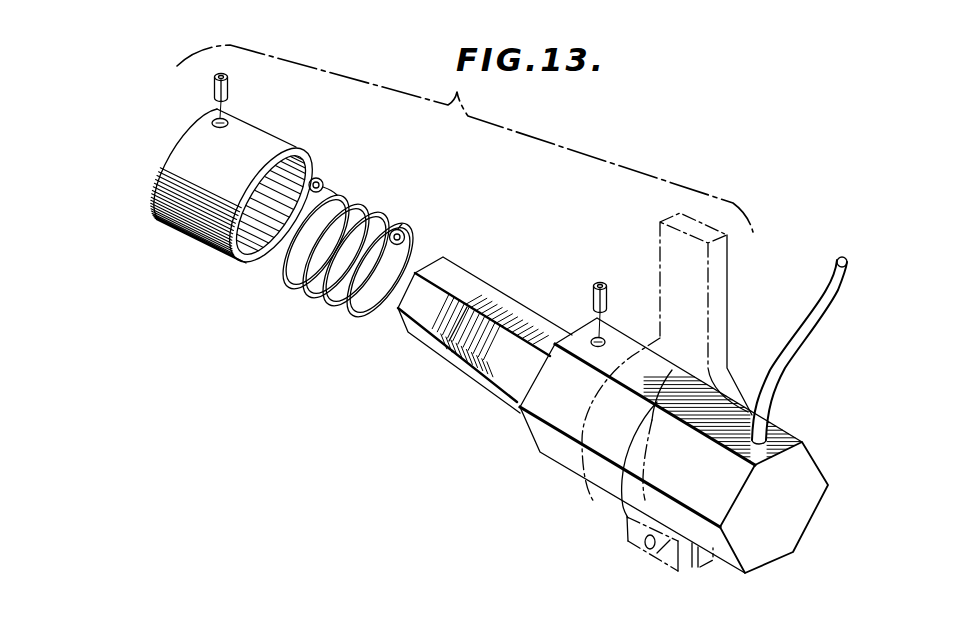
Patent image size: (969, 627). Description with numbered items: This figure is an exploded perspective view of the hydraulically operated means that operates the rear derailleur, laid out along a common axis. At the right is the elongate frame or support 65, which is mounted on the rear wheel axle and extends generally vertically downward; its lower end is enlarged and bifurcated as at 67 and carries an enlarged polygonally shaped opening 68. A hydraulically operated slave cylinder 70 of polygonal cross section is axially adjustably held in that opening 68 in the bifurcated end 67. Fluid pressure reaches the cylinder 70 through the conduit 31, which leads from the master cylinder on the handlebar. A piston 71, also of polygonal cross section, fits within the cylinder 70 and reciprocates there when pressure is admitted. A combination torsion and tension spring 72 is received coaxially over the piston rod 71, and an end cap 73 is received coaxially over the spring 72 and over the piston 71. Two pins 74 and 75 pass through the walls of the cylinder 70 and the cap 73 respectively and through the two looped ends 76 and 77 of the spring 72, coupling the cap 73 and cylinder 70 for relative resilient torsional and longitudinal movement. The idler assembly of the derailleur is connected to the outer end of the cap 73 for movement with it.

The conduit 31 is at (818, 316).
The frame or support 65 is at (729, 308).
The bifurcated end 67 is at (668, 548).
The polygonally shaped opening 68 is at (666, 428).
The slave cylinder 70 is at (783, 428).
The piston 71 is at (476, 271).
The combination torsion and tension spring 72 is at (362, 200).
The end cap 73 is at (258, 134).
The pin 74 is at (589, 298).
The pin 75 is at (231, 90).
The looped end 76 is at (404, 230).
The looped end 77 is at (320, 176).